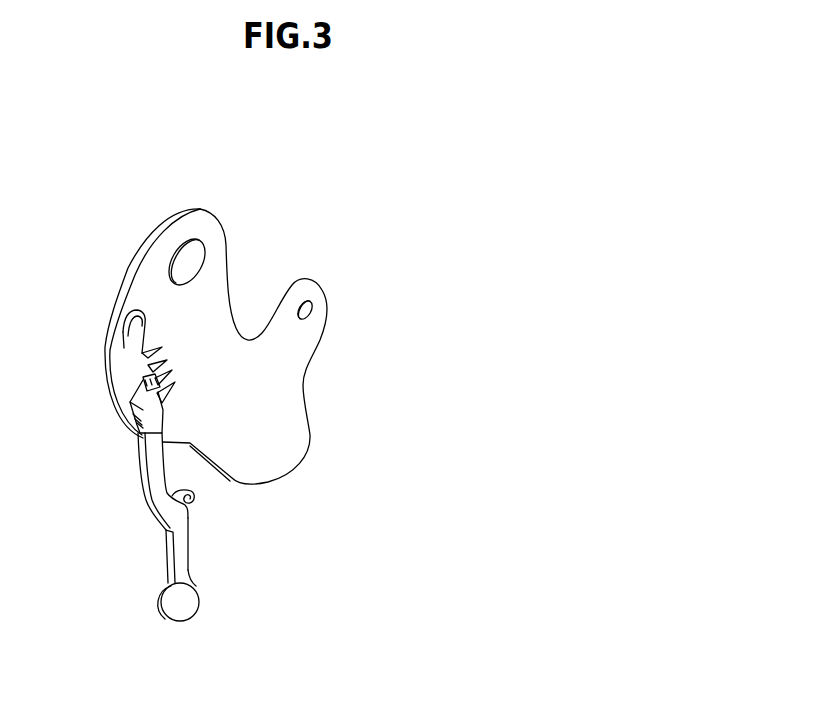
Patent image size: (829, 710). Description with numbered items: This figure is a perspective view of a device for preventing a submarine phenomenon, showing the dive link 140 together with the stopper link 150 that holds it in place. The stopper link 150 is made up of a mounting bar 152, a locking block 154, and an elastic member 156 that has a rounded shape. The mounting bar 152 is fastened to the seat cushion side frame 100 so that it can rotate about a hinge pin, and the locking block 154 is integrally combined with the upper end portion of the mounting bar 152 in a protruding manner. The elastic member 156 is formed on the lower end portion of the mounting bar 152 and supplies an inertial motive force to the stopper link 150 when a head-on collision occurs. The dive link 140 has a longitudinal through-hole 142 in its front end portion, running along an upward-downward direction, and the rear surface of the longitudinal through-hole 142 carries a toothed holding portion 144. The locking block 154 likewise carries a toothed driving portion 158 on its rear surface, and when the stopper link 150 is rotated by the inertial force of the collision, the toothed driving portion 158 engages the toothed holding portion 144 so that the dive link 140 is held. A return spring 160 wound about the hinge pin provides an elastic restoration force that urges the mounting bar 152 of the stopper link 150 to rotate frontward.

The seat cushion side frame 100 is at (472, 263).
The dive link 140 is at (213, 208).
The longitudinal through-hole 142 is at (125, 326).
The toothed holding portion 144 is at (163, 352).
The stopper link 150 is at (138, 486).
The mounting bar 152 is at (163, 502).
The locking block 154 is at (134, 430).
The elastic member 156 is at (182, 605).
The toothed driving portion 158 is at (140, 383).
The return spring 160 is at (192, 500).